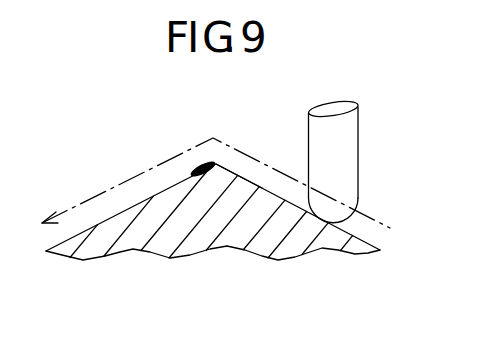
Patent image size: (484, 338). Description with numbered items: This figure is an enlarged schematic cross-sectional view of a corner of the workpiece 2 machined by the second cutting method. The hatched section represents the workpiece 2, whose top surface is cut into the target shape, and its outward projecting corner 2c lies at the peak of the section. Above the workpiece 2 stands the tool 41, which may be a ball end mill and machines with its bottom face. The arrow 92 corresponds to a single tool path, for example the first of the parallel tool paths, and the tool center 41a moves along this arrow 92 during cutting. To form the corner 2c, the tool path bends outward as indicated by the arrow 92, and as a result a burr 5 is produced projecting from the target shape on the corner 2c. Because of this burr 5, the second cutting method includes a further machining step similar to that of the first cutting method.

The workpiece 2 is at (195, 243).
The corner 2c is at (217, 166).
The burr 5 is at (191, 163).
The arrow 92 is at (120, 184).
The tool 41 is at (345, 139).
The tool center 41a is at (330, 200).